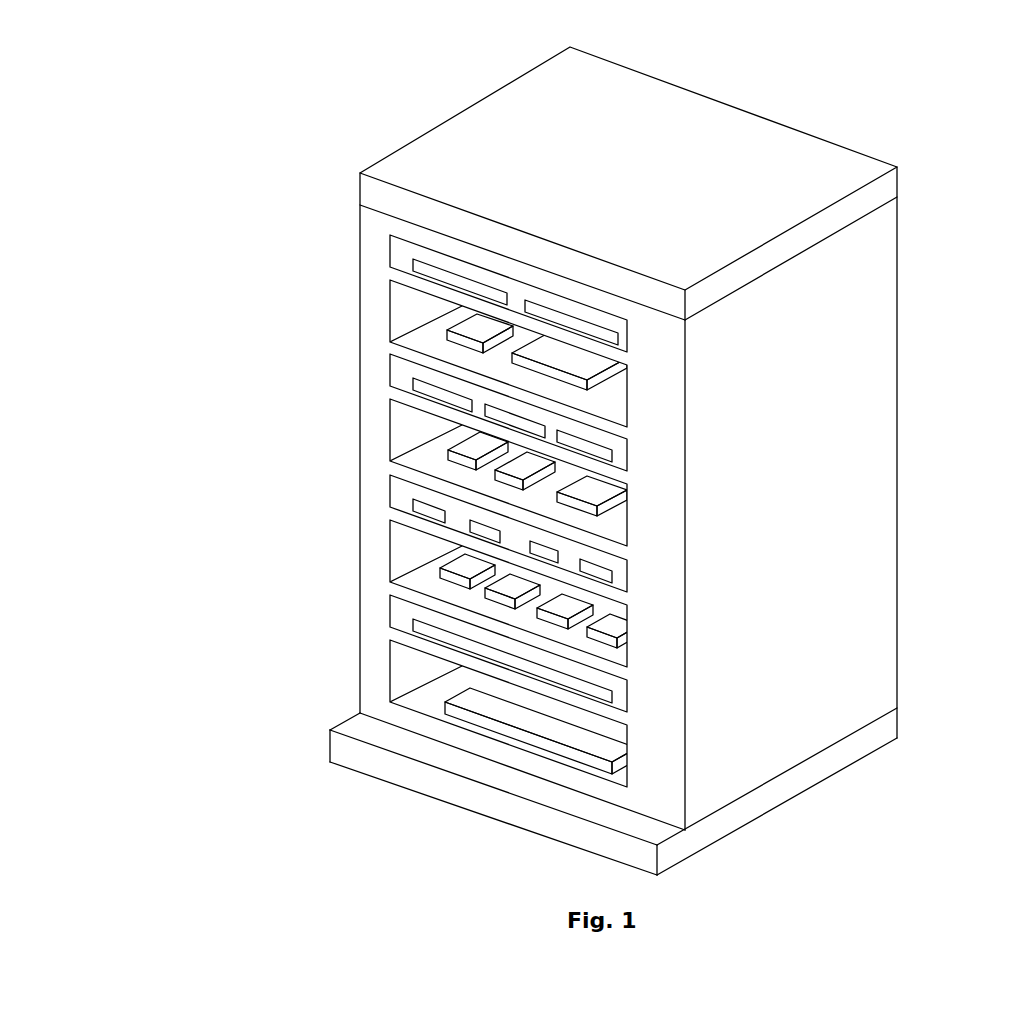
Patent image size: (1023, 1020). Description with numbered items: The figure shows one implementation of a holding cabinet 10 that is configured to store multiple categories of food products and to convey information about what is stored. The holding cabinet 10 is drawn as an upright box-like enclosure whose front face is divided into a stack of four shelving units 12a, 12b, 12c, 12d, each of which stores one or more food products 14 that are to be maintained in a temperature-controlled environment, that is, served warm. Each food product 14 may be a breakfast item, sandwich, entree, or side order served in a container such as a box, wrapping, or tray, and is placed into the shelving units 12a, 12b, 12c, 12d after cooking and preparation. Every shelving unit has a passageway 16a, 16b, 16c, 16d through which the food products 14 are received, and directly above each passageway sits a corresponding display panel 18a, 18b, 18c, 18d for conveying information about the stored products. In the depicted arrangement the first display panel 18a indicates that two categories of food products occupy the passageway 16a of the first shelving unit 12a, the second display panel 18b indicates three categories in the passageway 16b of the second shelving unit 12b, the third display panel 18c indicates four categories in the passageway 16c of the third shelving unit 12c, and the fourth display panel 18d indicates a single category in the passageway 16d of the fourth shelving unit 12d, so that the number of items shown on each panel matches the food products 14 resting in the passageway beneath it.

The holding cabinet 10 is at (452, 66).
The first shelving unit 12a is at (377, 230).
The second shelving unit 12b is at (377, 352).
The third shelving unit 12c is at (377, 471).
The fourth shelving unit 12d is at (377, 593).
The food product 14 is at (587, 383).
The passageway 16a is at (390, 318).
The passageway 16b is at (390, 440).
The passageway 16c is at (390, 561).
The passageway 16d is at (390, 681).
The first display panel 18a is at (390, 258).
The second display panel 18b is at (390, 378).
The third display panel 18c is at (390, 500).
The fourth display panel 18d is at (390, 620).